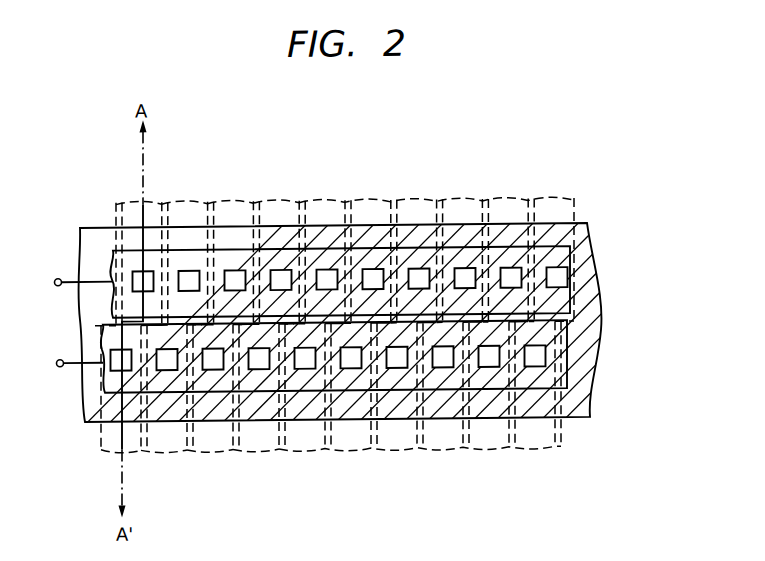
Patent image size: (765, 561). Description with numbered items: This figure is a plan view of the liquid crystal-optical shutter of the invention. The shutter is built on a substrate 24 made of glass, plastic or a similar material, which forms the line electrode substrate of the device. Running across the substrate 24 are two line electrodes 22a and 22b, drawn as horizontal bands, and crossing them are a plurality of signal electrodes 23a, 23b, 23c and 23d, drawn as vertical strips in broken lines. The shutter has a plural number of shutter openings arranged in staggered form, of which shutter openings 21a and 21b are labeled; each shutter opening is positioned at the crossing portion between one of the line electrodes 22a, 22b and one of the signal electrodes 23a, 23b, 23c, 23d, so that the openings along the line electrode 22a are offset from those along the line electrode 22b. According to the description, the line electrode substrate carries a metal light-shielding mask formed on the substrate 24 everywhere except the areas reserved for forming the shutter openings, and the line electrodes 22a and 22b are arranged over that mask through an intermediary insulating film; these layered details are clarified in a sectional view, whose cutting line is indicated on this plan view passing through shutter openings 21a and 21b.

The shutter opening 21a is at (113, 252).
The shutter opening 21b is at (104, 395).
The line electrode 22a is at (568, 257).
The line electrode 22b is at (569, 354).
The signal electrode 23a is at (292, 205).
The signal electrode 23b is at (242, 205).
The signal electrode 23c is at (195, 205).
The signal electrode 23d is at (152, 205).
The substrate 24 is at (592, 405).